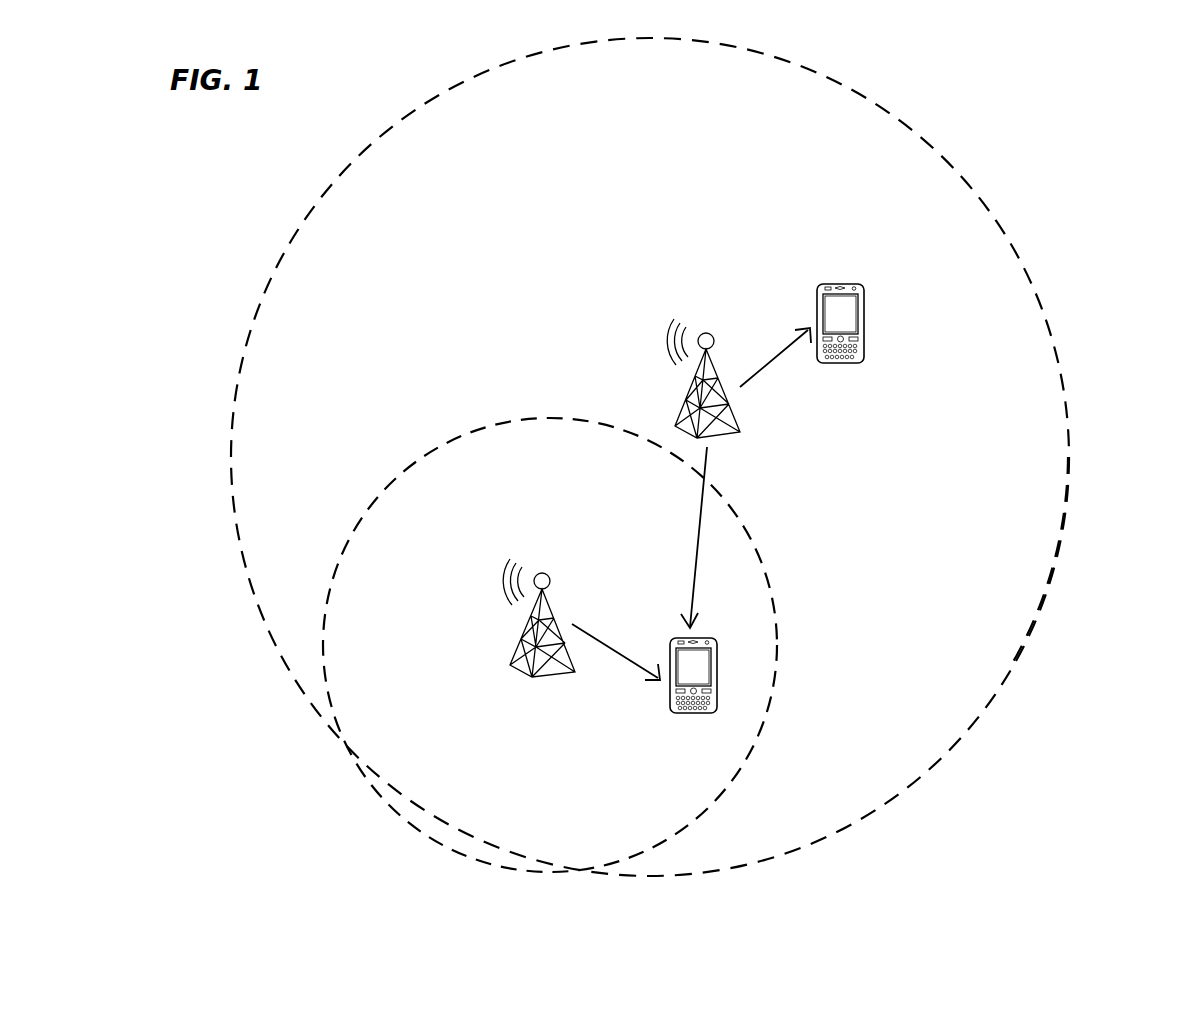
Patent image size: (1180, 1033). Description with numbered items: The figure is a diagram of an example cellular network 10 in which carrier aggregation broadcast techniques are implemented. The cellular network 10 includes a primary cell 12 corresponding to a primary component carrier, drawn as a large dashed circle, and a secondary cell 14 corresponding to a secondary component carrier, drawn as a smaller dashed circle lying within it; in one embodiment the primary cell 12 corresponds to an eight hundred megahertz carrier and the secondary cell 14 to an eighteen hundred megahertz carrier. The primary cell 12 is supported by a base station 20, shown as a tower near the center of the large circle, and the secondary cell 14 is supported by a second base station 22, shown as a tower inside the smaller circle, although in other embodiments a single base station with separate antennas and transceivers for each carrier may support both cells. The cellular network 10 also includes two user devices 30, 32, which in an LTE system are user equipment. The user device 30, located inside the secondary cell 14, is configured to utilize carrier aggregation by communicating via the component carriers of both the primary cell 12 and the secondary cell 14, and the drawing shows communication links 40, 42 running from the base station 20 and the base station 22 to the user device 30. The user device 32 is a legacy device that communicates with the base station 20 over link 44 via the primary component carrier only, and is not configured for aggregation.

The cellular network 10 is at (1112, 86).
The primary cell 12 is at (1013, 662).
The secondary cell 14 is at (750, 750).
The base station 20 is at (683, 398).
The base station 22 is at (520, 638).
The user device 30 is at (719, 694).
The user device 32 is at (866, 340).
The first wireless link 40 is at (691, 526).
The second wireless link 42 is at (604, 633).
The third wireless link 44 is at (772, 376).